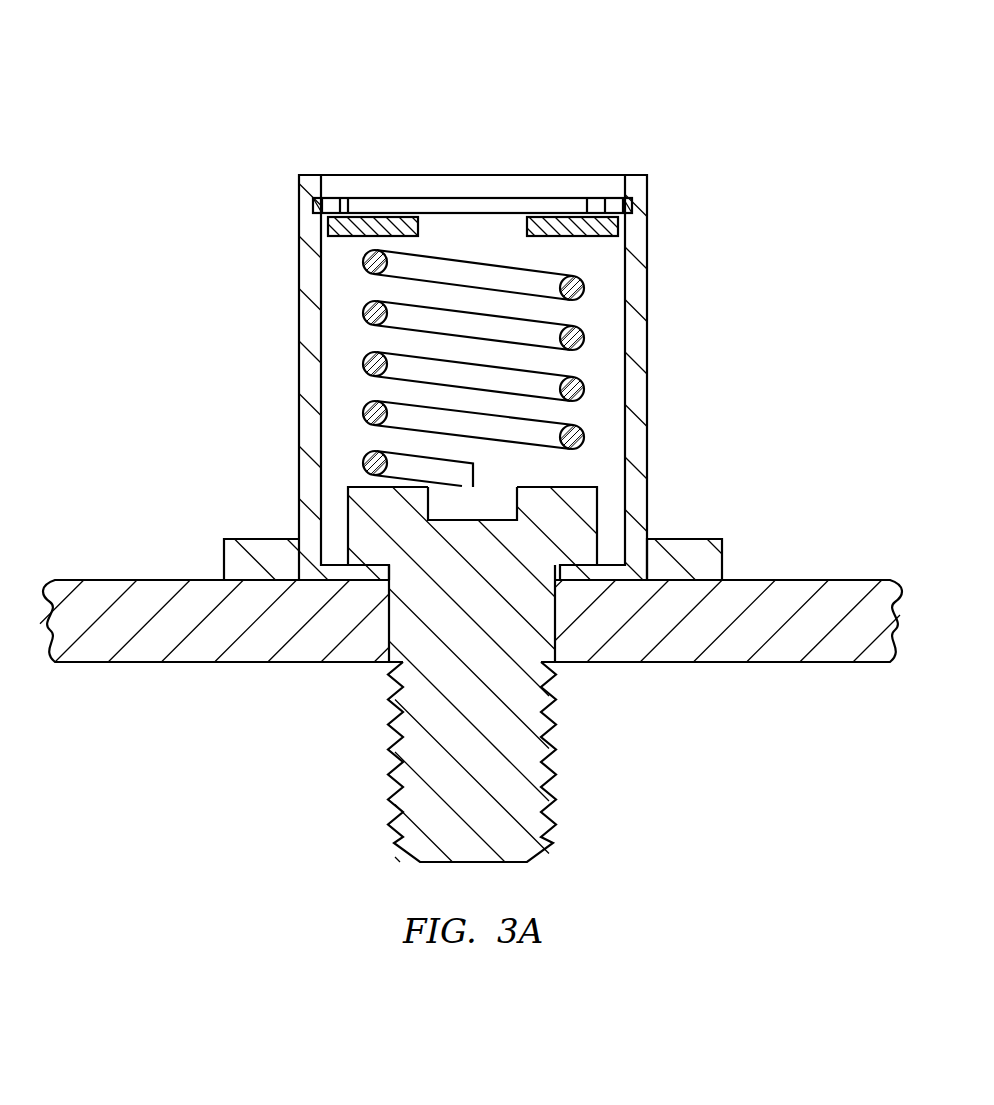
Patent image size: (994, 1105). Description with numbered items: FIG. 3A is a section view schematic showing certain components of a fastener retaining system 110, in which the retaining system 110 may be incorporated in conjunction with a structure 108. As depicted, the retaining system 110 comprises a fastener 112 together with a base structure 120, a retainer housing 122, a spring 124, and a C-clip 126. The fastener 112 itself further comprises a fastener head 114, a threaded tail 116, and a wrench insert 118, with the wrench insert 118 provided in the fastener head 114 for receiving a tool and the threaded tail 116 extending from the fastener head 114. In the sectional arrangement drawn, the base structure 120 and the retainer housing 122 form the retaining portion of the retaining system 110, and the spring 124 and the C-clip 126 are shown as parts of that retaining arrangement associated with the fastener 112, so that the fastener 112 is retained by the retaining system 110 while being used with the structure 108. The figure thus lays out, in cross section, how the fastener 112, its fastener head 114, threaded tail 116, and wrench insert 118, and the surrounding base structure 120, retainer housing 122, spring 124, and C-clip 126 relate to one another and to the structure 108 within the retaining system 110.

The structure 108 is at (150, 595).
The retaining system 110 is at (215, 128).
The fastener 112 is at (460, 638).
The fastener head 114 is at (357, 505).
The threaded tail 116 is at (384, 773).
The wrench insert 118 is at (510, 490).
The base structure 120 is at (702, 548).
The retainer housing 122 is at (297, 278).
The spring 124 is at (520, 367).
The C-clip 126 is at (505, 210).